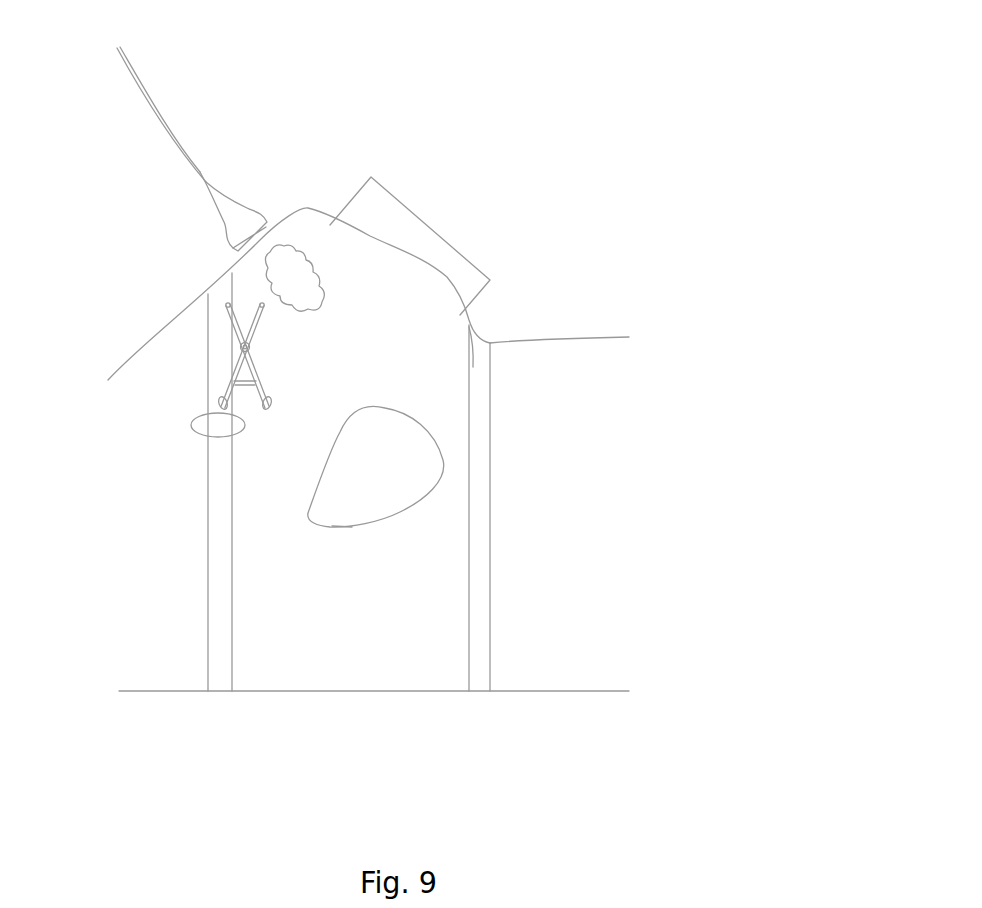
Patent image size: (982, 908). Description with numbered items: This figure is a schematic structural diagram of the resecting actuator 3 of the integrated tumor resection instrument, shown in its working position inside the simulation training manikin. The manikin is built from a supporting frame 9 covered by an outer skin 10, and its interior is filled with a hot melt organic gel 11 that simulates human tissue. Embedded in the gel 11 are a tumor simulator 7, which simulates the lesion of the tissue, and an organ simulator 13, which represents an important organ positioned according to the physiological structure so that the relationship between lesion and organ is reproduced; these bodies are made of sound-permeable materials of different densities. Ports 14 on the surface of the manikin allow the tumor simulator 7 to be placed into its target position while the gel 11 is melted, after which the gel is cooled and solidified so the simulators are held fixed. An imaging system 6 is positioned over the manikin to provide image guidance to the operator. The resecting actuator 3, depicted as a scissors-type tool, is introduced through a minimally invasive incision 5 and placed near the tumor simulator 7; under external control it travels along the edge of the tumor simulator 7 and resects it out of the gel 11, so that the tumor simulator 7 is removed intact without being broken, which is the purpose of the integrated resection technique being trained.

The resecting actuator 3 is at (233, 323).
The minimally invasive incision 5 is at (212, 430).
The imaging system 6 is at (208, 185).
The tumor simulator 7 is at (292, 278).
The supporting frame 9 is at (482, 503).
The outer skin 10 is at (568, 338).
The hot melt organic gel 11 is at (388, 551).
The organ simulator 13 is at (329, 527).
The ports 14 is at (430, 228).